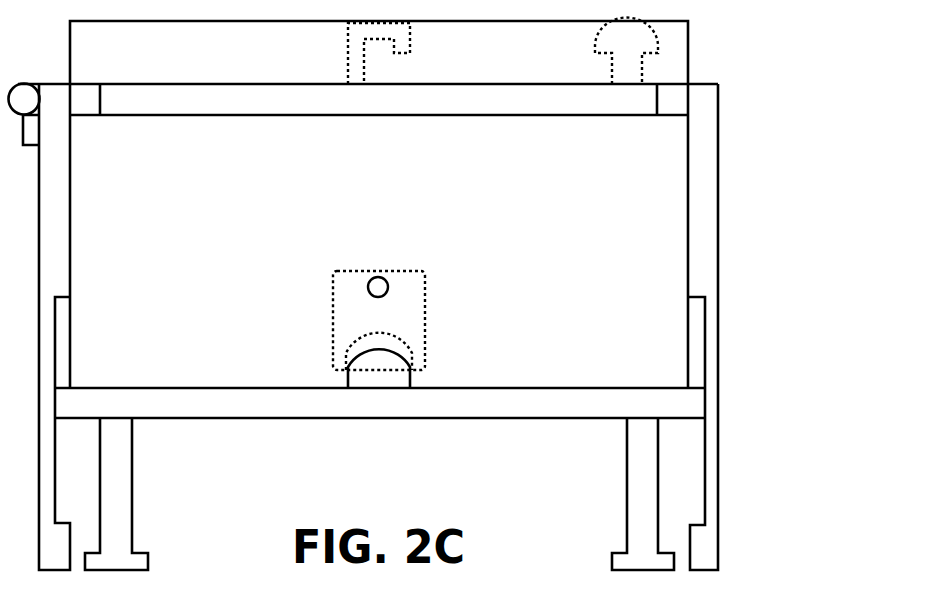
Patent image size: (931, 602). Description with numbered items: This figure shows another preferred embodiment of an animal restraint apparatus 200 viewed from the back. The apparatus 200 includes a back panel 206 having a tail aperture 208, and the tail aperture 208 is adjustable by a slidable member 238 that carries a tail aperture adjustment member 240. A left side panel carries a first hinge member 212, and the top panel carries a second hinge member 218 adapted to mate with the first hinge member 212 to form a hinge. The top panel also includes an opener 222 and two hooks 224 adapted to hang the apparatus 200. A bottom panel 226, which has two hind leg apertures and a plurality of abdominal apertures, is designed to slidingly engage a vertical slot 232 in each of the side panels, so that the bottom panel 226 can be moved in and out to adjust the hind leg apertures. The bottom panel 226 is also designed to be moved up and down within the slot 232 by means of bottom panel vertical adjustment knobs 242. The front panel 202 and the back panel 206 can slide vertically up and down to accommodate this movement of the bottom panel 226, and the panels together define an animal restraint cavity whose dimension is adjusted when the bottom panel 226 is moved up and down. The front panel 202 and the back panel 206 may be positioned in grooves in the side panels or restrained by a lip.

The animal restraint apparatus 200 is at (740, 240).
The front panel 202 is at (635, 171).
The back panel 206 is at (542, 110).
The tail aperture 208 is at (395, 383).
The first hinge member 212 is at (32, 133).
The second hinge member 218 is at (24, 100).
The opener 222 is at (643, 35).
The hooks 224 is at (403, 35).
The bottom panel 226 is at (533, 415).
The vertical slot 232 is at (697, 360).
The slidable member 238 is at (425, 327).
The tail aperture adjustment member 240 is at (378, 287).
The bottom panel vertical adjustment knobs 242 is at (117, 553).